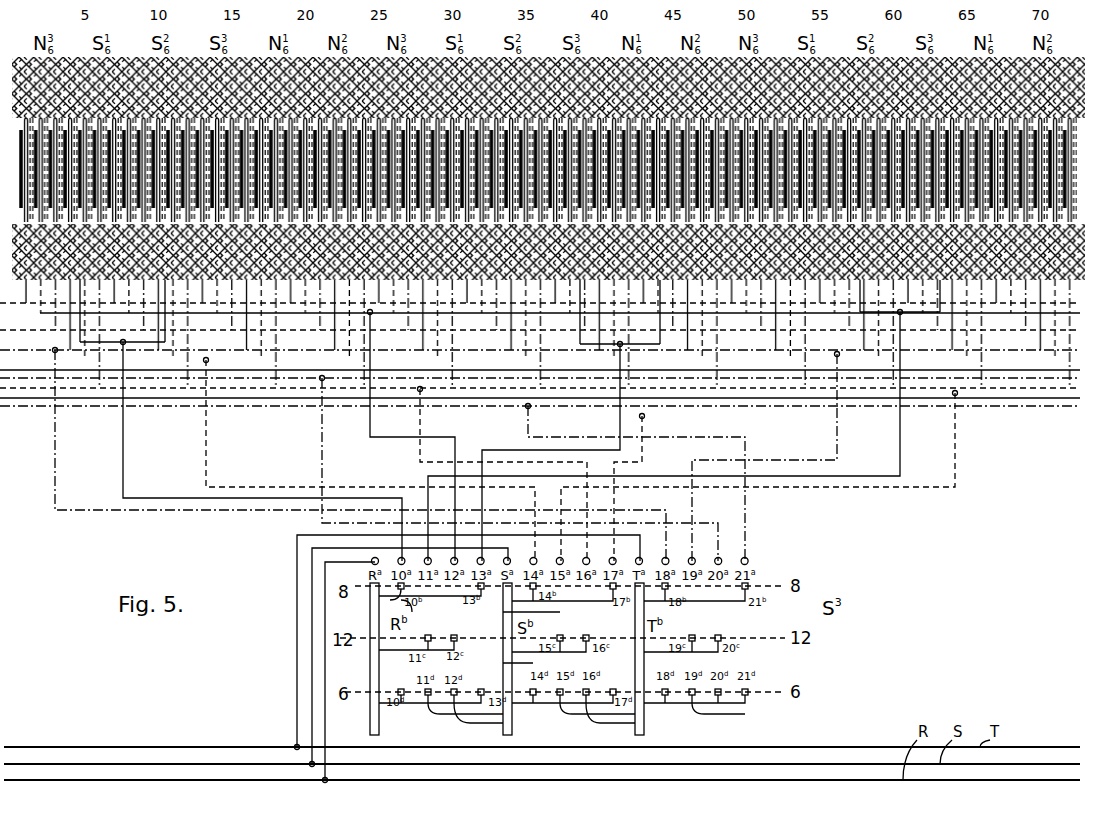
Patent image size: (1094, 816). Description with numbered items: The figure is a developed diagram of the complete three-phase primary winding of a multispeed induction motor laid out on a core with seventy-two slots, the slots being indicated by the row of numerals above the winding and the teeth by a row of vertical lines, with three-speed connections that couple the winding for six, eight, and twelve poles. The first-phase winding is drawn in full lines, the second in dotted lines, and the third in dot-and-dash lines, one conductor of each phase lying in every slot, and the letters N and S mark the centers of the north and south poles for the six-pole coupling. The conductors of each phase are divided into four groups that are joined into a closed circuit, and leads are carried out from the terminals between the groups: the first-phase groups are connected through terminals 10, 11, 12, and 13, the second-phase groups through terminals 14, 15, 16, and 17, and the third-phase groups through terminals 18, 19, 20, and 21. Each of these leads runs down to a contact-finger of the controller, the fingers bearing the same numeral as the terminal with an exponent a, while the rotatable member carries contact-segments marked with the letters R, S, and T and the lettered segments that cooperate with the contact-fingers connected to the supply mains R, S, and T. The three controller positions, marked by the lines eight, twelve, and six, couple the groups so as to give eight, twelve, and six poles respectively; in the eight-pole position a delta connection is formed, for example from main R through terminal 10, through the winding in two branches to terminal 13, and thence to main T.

The terminal 10 is at (241, 420).
The terminal 11 is at (684, 420).
The terminal 12 is at (412, 436).
The terminal 13 is at (571, 420).
The terminal 14 is at (359, 457).
The terminal 15 is at (762, 466).
The terminal 16 is at (503, 466).
The terminal 17 is at (639, 488).
The terminal 18 is at (360, 455).
The terminal 19 is at (766, 449).
The terminal 20 is at (519, 469).
The terminal 21 is at (626, 483).